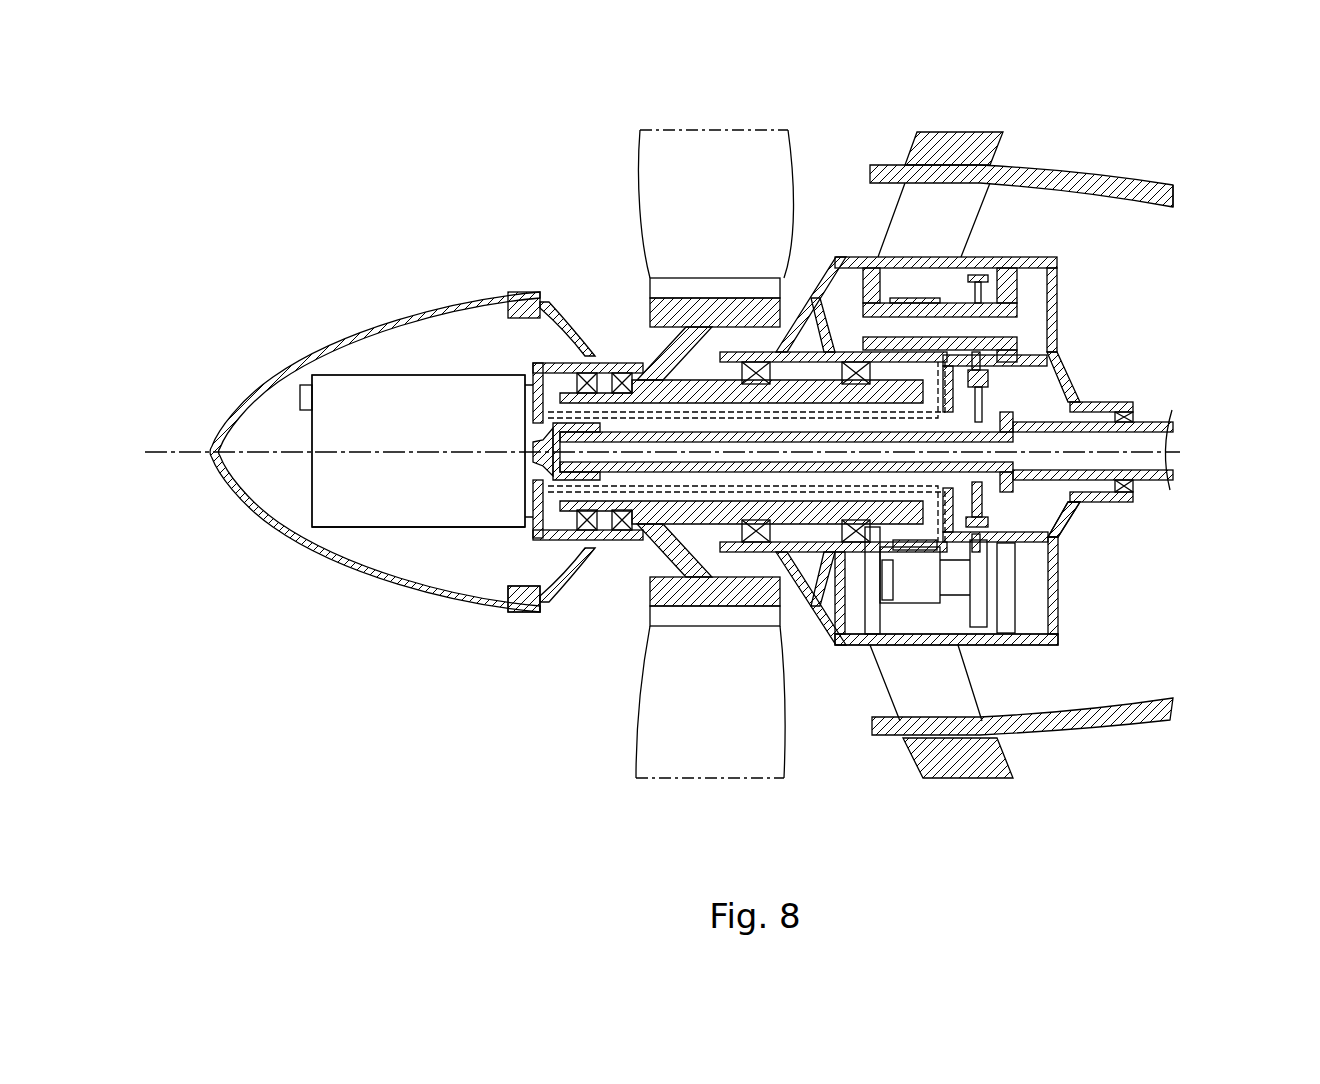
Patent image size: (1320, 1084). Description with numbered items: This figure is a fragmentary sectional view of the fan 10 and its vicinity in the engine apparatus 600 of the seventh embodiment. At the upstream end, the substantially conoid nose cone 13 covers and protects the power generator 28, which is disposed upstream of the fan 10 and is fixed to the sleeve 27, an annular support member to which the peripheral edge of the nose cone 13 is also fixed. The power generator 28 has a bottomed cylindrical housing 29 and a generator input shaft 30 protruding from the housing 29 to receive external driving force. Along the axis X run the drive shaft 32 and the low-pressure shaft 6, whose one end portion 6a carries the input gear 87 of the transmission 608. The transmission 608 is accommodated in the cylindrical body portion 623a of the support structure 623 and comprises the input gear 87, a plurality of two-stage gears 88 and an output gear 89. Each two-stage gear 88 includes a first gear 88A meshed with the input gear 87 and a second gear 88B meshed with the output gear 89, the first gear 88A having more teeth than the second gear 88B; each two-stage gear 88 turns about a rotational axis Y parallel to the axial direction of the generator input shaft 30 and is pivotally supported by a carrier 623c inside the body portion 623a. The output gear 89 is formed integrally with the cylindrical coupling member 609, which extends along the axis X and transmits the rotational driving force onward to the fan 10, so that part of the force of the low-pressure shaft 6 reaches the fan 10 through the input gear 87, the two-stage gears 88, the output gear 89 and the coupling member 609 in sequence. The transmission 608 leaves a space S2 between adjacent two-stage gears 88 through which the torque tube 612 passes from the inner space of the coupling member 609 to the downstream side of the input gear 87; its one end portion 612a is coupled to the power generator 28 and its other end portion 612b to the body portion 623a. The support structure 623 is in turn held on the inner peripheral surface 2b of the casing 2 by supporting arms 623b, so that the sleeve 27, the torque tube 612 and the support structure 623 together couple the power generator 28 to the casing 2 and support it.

The engine apparatus 600 is at (392, 190).
The fan 10 is at (625, 170).
The sleeve 27 is at (555, 330).
The power generator 28 is at (370, 375).
The nose cone 13 is at (265, 373).
The axis X is at (243, 452).
The generator input shaft 30 is at (565, 412).
The housing 29 is at (388, 527).
The one end portion of the torque tube 612a is at (520, 597).
The torque tube 612 is at (658, 514).
The drive shaft 32 is at (697, 510).
The coupling member 609 is at (835, 600).
The output gear 89 is at (877, 535).
The rotational axis of two-stage gear Y is at (1030, 325).
The second gear 88B is at (910, 300).
The first gear 88A is at (950, 285).
The two-stage gear 88 is at (993, 270).
The casing 2 is at (1063, 165).
The inner peripheral surface 2b is at (1140, 205).
The carrier 623c is at (1027, 308).
The transmission 608 is at (1062, 283).
The one end portion of the low-pressure shaft 6a is at (1020, 392).
The input gear 87 is at (1010, 408).
The low-pressure shaft 6 is at (1172, 422).
The other end portion of the torque tube 612b is at (1058, 540).
The space S2 is at (1062, 597).
The support structure 623 is at (1058, 620).
The body portion 623a is at (1060, 632).
The supporting arms 623b is at (978, 700).